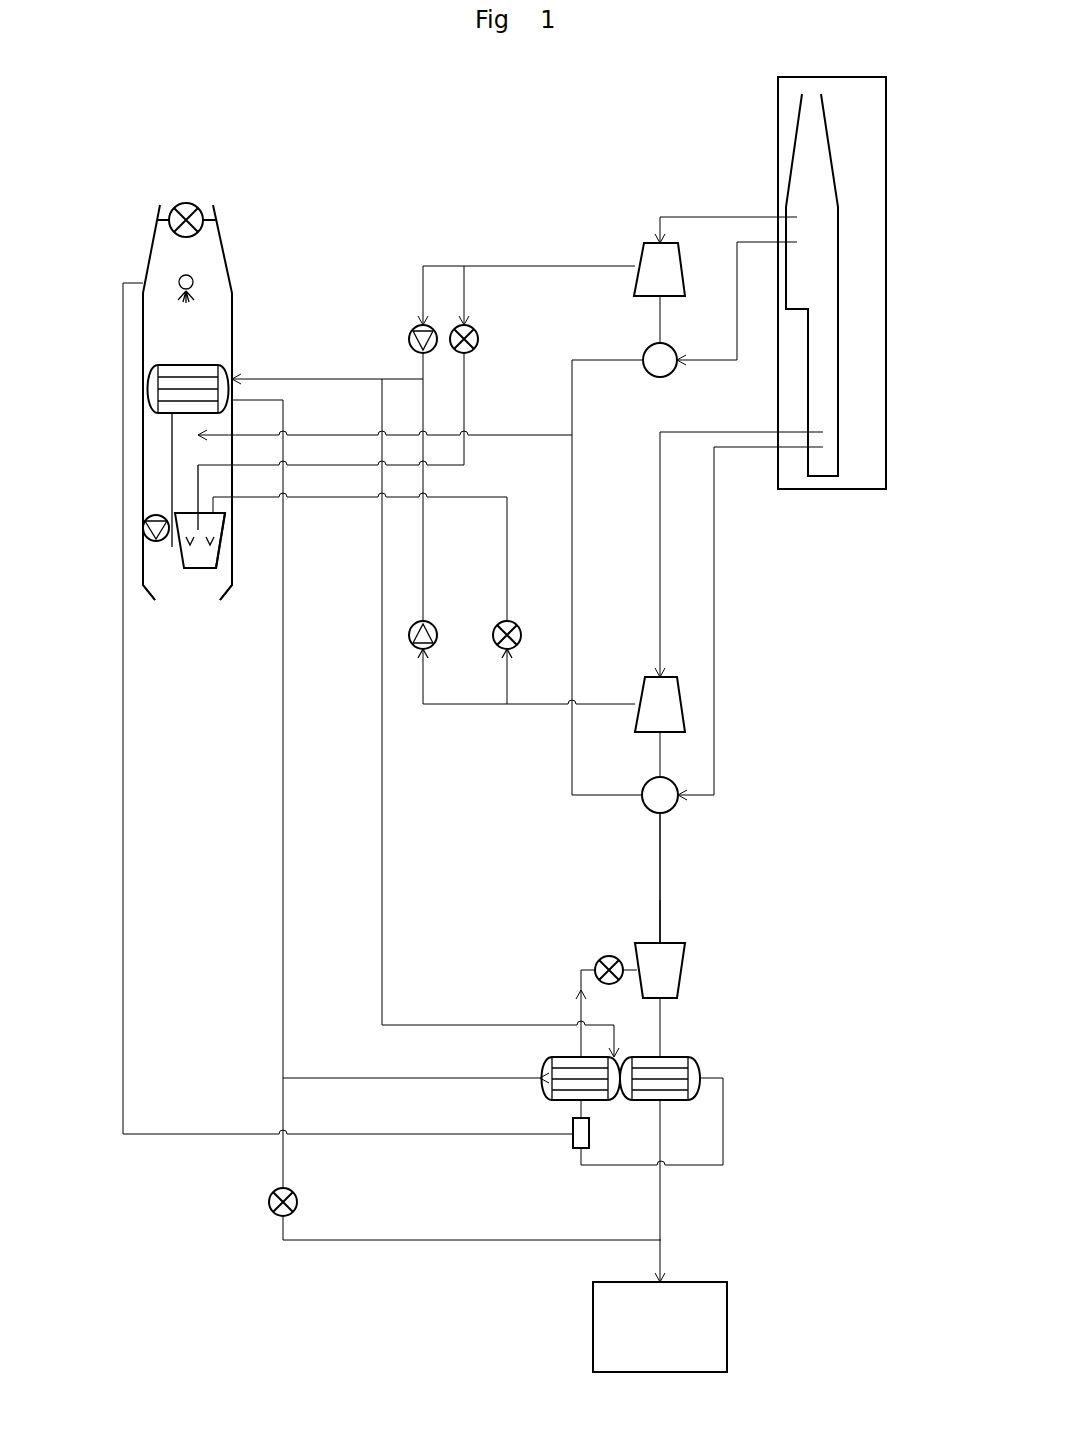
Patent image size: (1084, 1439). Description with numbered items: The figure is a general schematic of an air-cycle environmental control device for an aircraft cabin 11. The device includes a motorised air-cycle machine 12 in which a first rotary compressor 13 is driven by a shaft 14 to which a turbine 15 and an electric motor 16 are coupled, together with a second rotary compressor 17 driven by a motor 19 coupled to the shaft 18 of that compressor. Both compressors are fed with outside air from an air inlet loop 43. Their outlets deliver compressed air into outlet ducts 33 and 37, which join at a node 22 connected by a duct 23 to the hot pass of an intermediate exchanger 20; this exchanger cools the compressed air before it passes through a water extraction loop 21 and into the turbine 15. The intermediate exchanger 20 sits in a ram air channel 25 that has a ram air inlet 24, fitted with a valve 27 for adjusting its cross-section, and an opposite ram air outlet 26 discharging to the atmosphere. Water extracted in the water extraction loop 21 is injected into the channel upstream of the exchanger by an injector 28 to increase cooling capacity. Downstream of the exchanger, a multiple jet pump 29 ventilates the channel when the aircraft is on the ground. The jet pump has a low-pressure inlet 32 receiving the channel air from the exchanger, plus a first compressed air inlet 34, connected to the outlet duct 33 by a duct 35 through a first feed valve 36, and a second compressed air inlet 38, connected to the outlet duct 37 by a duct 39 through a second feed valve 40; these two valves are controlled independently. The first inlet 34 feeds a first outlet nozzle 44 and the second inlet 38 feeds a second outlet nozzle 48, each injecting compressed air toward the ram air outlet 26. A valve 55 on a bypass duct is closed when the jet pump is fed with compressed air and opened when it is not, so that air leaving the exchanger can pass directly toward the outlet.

The aircraft cabin 11 is at (644, 1346).
The motorised air-cycle machine 12 is at (705, 872).
The first rotary compressor 13 is at (667, 713).
The shaft 14 is at (662, 922).
The turbine 15 is at (667, 977).
The electric motor 16 is at (680, 808).
The second rotary compressor 17 is at (646, 234).
The shaft 18 is at (660, 316).
The motor 19 is at (645, 368).
The intermediate exchanger 20 is at (152, 385).
The water extraction loop 21 is at (693, 1127).
The node 22 is at (423, 379).
The duct 23 is at (327, 378).
The ram air inlet 24 is at (210, 205).
The ram air channel 25 is at (158, 330).
The ram air outlet 26 is at (180, 592).
The valve 27 is at (186, 203).
The injector 28 is at (180, 278).
The multiple jet pump 29 is at (193, 555).
The low-pressure inlet 32 is at (210, 453).
The outlet duct 33 is at (610, 704).
The first compressed air inlet 34 is at (215, 517).
The duct 35 is at (470, 497).
The first feed valve 36 is at (495, 648).
The outlet duct 37 is at (538, 266).
The second compressed air inlet 38 is at (197, 520).
The duct 39 is at (464, 388).
The second feed valve 40 is at (480, 339).
The air inlet loop 43 is at (864, 166).
The first outlet nozzle 44 is at (215, 535).
The second outlet nozzle 48 is at (180, 558).
The valve 55 is at (143, 528).